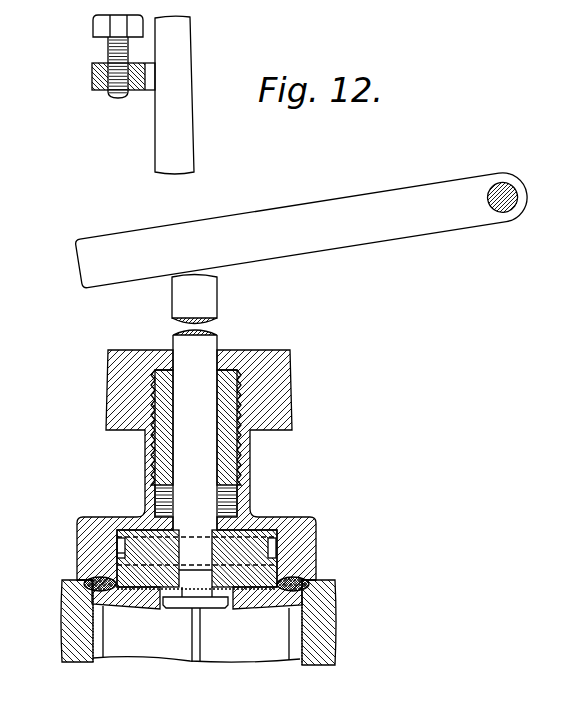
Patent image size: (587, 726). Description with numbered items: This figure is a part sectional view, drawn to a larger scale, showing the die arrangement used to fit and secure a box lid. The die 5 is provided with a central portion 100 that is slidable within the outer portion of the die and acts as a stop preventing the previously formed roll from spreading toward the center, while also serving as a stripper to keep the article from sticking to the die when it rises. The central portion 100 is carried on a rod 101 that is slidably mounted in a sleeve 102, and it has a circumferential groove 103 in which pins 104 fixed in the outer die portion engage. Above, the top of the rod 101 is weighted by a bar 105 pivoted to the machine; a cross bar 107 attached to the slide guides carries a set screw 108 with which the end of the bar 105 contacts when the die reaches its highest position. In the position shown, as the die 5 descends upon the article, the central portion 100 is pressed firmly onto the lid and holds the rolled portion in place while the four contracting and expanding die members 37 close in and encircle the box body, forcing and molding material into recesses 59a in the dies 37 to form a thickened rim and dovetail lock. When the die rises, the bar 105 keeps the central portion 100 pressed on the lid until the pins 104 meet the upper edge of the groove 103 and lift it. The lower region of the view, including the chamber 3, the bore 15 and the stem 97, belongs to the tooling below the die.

The set screw 108 is at (101, 30).
The cross bar 107 is at (92, 74).
The bar 105 is at (303, 228).
The rod 101 is at (203, 342).
The sleeve 102 is at (236, 448).
The central portion 100 is at (262, 518).
The circumferential groove 103 is at (118, 543).
The pins 104 is at (119, 558).
The die 5 is at (305, 556).
The recesses 59a is at (309, 583).
The contracting and expanding die members 37 is at (75, 620).
The bore 15 is at (90, 657).
The chamber 3 is at (196, 634).
The valve stem 97 is at (212, 590).